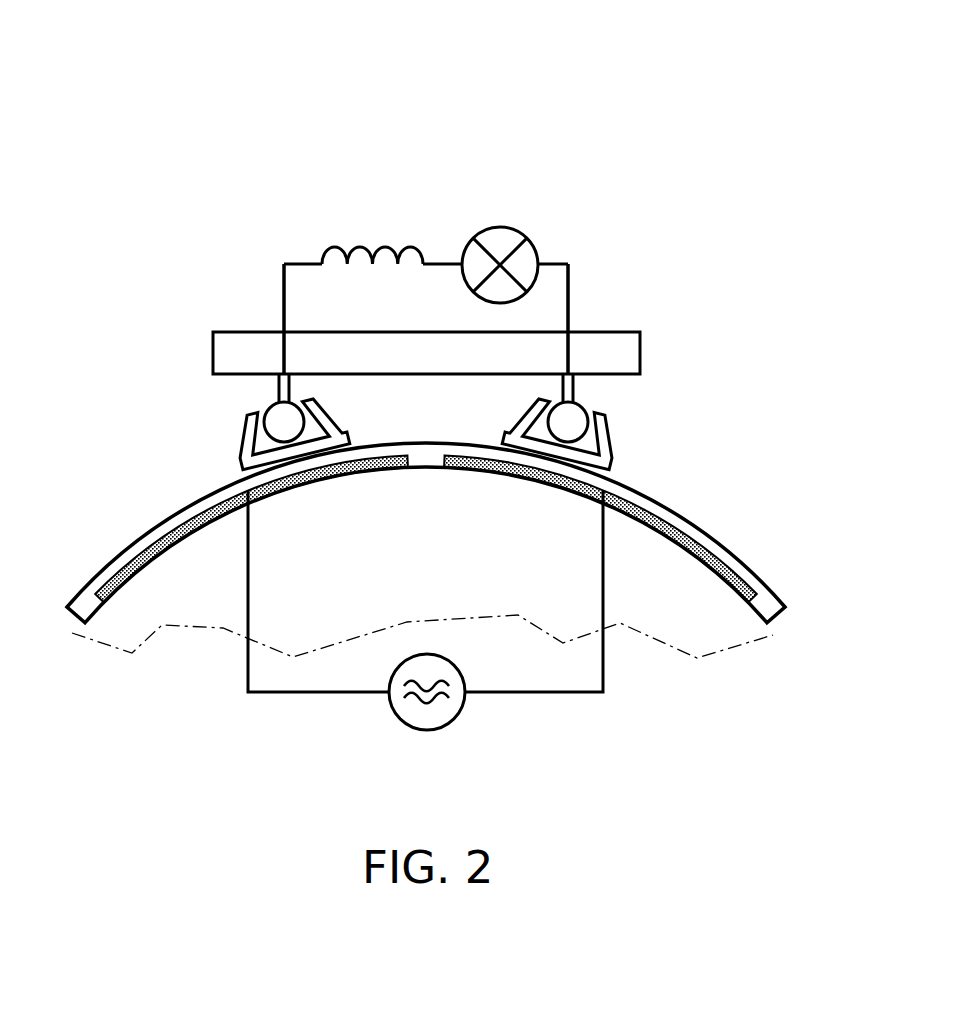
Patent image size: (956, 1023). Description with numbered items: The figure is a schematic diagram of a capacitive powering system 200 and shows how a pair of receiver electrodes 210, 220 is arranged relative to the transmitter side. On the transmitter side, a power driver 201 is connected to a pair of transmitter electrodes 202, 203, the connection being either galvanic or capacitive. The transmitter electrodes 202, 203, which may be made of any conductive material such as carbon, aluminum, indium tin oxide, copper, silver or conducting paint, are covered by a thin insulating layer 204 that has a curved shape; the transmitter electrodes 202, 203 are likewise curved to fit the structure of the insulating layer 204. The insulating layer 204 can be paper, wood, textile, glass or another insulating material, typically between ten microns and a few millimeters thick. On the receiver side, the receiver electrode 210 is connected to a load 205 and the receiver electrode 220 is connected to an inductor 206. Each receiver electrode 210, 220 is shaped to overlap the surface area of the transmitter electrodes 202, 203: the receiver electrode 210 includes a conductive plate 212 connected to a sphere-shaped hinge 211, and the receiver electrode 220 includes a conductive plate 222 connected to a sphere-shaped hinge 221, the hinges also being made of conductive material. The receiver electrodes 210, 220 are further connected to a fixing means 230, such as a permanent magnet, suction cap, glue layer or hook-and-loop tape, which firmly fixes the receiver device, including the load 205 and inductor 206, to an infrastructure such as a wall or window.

The capacitive powering system 200 is at (144, 148).
The power driver 201 is at (455, 720).
The transmitter electrode 202 is at (670, 535).
The transmitter electrode 203 is at (185, 535).
The insulating layer 204 is at (688, 523).
The load 205 is at (500, 227).
The inductor 206 is at (360, 247).
The receiver electrode 210 is at (568, 298).
The sphere-shaped hinge 211 is at (587, 405).
The conductive plate 212 is at (612, 460).
The receiver electrode 220 is at (284, 298).
The sphere-shaped hinge 221 is at (265, 405).
The conductive plate 222 is at (240, 460).
The fixing means 230 is at (640, 352).